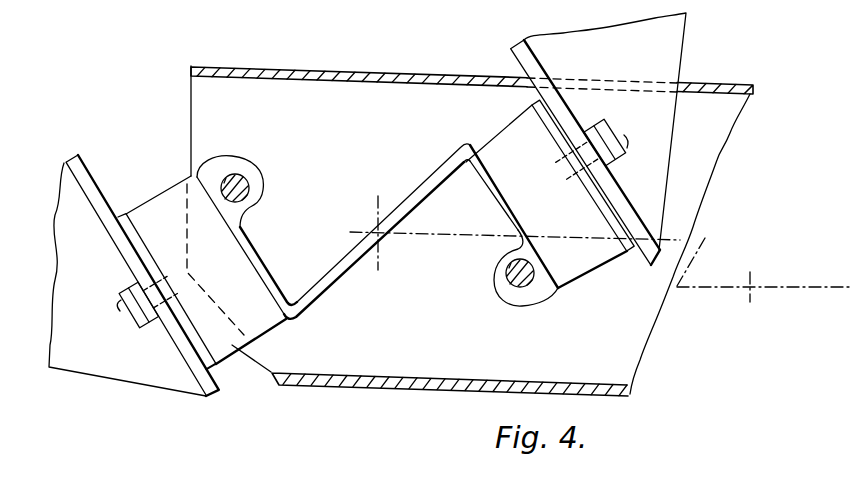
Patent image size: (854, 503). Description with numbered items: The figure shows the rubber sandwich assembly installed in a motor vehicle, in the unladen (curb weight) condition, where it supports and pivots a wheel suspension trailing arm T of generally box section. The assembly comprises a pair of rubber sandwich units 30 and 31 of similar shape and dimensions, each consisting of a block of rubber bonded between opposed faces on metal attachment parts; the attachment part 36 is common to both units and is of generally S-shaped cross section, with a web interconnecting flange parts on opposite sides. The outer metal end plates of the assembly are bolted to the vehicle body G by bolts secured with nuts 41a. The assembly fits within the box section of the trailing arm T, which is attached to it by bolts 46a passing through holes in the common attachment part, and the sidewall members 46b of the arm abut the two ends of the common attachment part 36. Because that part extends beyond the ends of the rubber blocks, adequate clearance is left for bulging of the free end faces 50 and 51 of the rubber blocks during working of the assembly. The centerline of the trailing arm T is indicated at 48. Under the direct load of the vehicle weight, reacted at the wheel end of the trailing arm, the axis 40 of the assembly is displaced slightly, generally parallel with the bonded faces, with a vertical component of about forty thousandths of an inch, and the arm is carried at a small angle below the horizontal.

The trailing arm T is at (313, 108).
The sidewall members 46b is at (357, 116).
The vehicle body G is at (88, 181).
The rubber sandwich unit 30 is at (166, 222).
The rubber sandwich unit 31 is at (498, 141).
The common attachment part 36 is at (417, 195).
The axis 40 is at (376, 229).
The nuts 41a is at (145, 326).
The bolts 46a is at (248, 178).
The centerline 48 is at (700, 248).
The free end face 50 is at (223, 257).
The free end face 51 is at (605, 227).